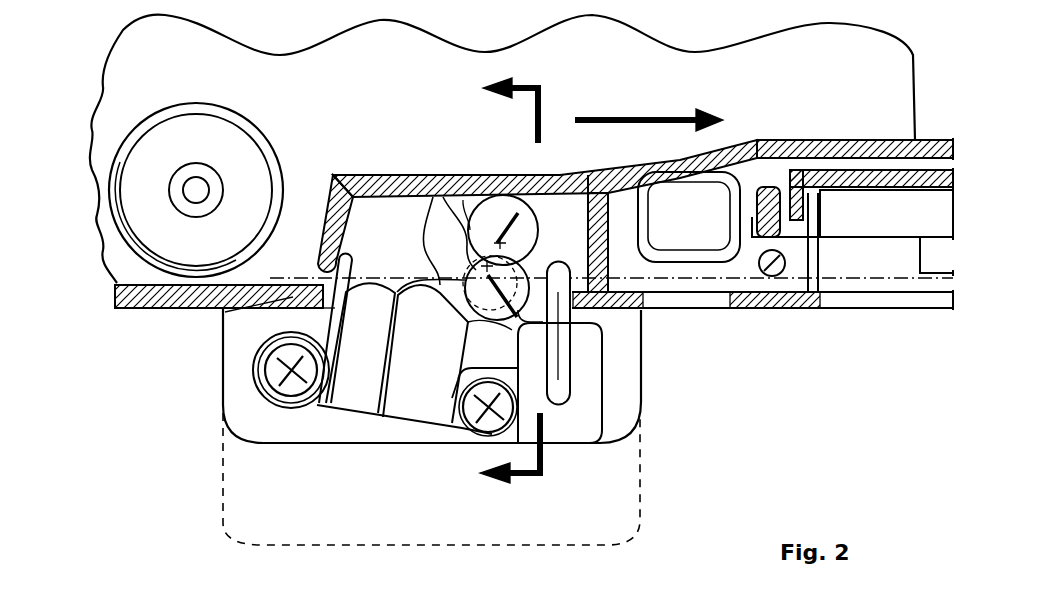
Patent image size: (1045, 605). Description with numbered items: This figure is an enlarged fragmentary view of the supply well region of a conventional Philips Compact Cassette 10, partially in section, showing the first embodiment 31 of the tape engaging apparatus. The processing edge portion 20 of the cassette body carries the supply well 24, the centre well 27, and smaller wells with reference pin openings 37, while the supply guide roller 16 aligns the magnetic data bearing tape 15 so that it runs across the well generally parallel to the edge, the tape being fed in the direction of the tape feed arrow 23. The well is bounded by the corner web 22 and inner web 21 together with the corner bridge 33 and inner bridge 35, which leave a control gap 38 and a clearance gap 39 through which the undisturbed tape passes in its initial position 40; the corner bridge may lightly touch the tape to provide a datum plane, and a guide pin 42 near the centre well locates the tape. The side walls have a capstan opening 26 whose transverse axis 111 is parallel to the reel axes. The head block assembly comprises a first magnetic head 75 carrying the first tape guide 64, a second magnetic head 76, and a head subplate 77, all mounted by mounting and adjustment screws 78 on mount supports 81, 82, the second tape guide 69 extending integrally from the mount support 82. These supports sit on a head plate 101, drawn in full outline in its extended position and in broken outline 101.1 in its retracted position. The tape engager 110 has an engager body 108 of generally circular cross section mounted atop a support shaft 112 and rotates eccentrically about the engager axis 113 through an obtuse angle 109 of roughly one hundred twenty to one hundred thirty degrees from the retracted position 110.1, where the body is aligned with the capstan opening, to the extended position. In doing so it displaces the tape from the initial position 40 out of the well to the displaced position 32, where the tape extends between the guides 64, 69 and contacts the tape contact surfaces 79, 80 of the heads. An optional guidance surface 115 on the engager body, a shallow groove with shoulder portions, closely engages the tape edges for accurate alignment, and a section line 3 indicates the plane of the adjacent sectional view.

The Philips Compact Cassette 10 is at (487, 30).
The magnetic data bearing tape 15 is at (108, 160).
The supply guide roller 16 is at (198, 140).
The corner web 22 is at (223, 335).
The corner bridge 33 is at (338, 190).
The supply well 24 is at (393, 212).
The capstan opening 26 is at (552, 250).
The inner bridge 35 is at (604, 270).
The clearance gap 39 is at (703, 195).
The centre well 27 is at (872, 206).
The reference pin opening 37 is at (735, 173).
The guide pin 42 is at (786, 262).
The inner web 21 is at (643, 315).
The processing edge portion 20 is at (773, 325).
The first embodiment 31 is at (745, 392).
The section line 3 is at (510, 282).
The tape feed arrow 23 is at (667, 98).
The transverse axis 111 is at (515, 213).
The support shaft 112 is at (482, 325).
The obtuse angle 109 is at (540, 205).
The engager axis 113 is at (465, 215).
The tape engager 110 is at (444, 197).
The retracted position of the tape engager 110.1 is at (497, 187).
The tape contact surface 80 is at (436, 262).
The tape contact surface 79 is at (377, 273).
The second tape guide 69 is at (565, 305).
The first tape guide 64 is at (348, 262).
The control gap 38 is at (322, 272).
The initial undisturbed position 40 is at (390, 303).
The engager body 108 is at (458, 326).
The guidance surface 115 is at (470, 332).
The head subplate 77 is at (458, 432).
The head plate 101 is at (627, 353).
The retracted position of the head plate 101.1 is at (652, 497).
The displaced position 32 is at (528, 330).
The mount support 81 is at (262, 440).
The mounting and adjustment screws 78 is at (285, 400).
The first magnetic head 75 is at (354, 400).
The second magnetic head 76 is at (417, 405).
The mount support 82 is at (563, 423).